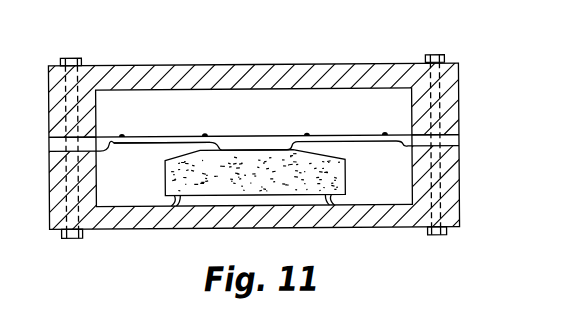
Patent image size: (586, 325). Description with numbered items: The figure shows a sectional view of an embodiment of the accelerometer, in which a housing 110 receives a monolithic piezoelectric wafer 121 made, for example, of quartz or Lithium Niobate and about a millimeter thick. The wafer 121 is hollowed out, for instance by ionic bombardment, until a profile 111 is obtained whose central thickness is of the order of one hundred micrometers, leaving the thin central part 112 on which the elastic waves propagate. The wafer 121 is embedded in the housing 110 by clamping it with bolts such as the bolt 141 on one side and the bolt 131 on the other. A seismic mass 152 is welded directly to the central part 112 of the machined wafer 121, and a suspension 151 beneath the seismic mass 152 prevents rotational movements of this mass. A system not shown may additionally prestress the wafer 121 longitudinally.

The housing 110 is at (459, 197).
The profile 111 is at (310, 148).
The central part 112 is at (247, 142).
The wafer 121 is at (459, 137).
The bolt 131 is at (445, 60).
The bolt 141 is at (82, 59).
The suspension 151 is at (335, 198).
The seismic mass 152 is at (165, 172).